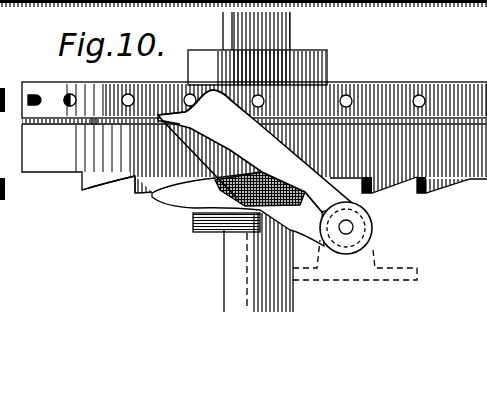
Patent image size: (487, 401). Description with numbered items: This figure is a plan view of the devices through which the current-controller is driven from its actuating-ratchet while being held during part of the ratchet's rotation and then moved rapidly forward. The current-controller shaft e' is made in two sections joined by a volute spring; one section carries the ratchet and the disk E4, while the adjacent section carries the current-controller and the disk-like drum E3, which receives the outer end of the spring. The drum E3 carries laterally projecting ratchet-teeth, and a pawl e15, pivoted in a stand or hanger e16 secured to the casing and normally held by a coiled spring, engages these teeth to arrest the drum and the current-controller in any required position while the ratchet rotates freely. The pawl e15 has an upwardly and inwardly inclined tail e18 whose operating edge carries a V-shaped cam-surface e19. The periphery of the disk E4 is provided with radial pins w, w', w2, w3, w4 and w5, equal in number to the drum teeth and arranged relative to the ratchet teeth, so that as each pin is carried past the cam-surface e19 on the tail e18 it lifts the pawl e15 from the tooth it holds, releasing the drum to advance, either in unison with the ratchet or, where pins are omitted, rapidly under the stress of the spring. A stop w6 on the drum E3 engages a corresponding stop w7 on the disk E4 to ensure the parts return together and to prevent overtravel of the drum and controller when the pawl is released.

The current-controller shaft e' is at (257, 162).
The disk E4 is at (254, 90).
The disk-like drum E3 is at (254, 174).
The radial pin w is at (266, 86).
The radial pin w' is at (350, 87).
The radial pin w2 is at (423, 96).
The radial pin w3 is at (62, 96).
The radial pin w4 is at (135, 95).
The radial pin w5 is at (194, 95).
The stop w6 is at (94, 125).
The stop w7 is at (98, 100).
The pawl e15 is at (160, 208).
The stand or hanger e16 is at (355, 241).
The tail e18 is at (255, 151).
The V-shaped cam-surface e19 is at (204, 107).